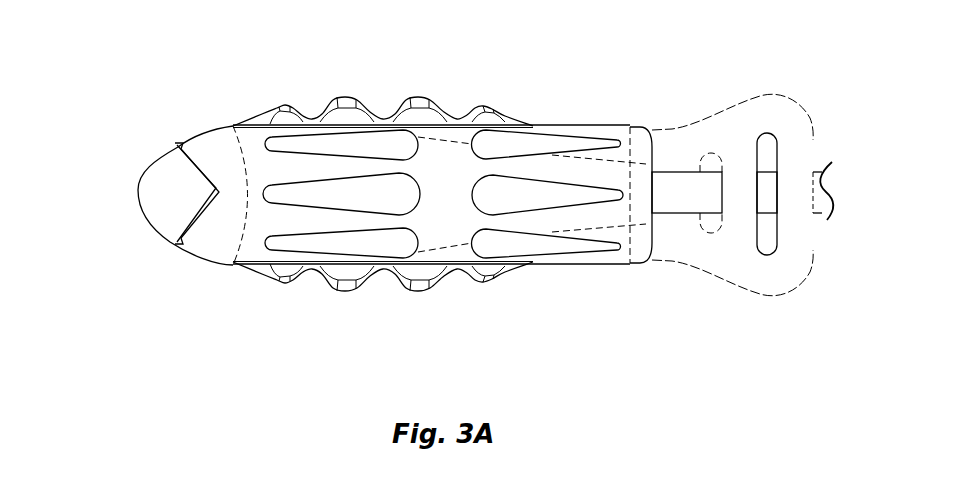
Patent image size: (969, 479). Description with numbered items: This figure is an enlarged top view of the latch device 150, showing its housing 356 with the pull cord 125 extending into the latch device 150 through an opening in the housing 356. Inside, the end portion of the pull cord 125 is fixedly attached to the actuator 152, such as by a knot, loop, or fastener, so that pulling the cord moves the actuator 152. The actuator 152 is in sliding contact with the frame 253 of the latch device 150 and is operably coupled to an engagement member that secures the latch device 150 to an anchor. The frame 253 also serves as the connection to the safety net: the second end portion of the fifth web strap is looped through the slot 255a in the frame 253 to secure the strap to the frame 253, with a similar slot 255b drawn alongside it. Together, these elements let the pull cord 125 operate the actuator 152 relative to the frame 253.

The latch device 150 is at (155, 58).
The housing 356 is at (212, 252).
The actuator 152 is at (452, 277).
The pull cord 125 is at (677, 190).
The frame 253 is at (737, 117).
The slot 255a is at (765, 255).
The second slot 255b is at (710, 233).